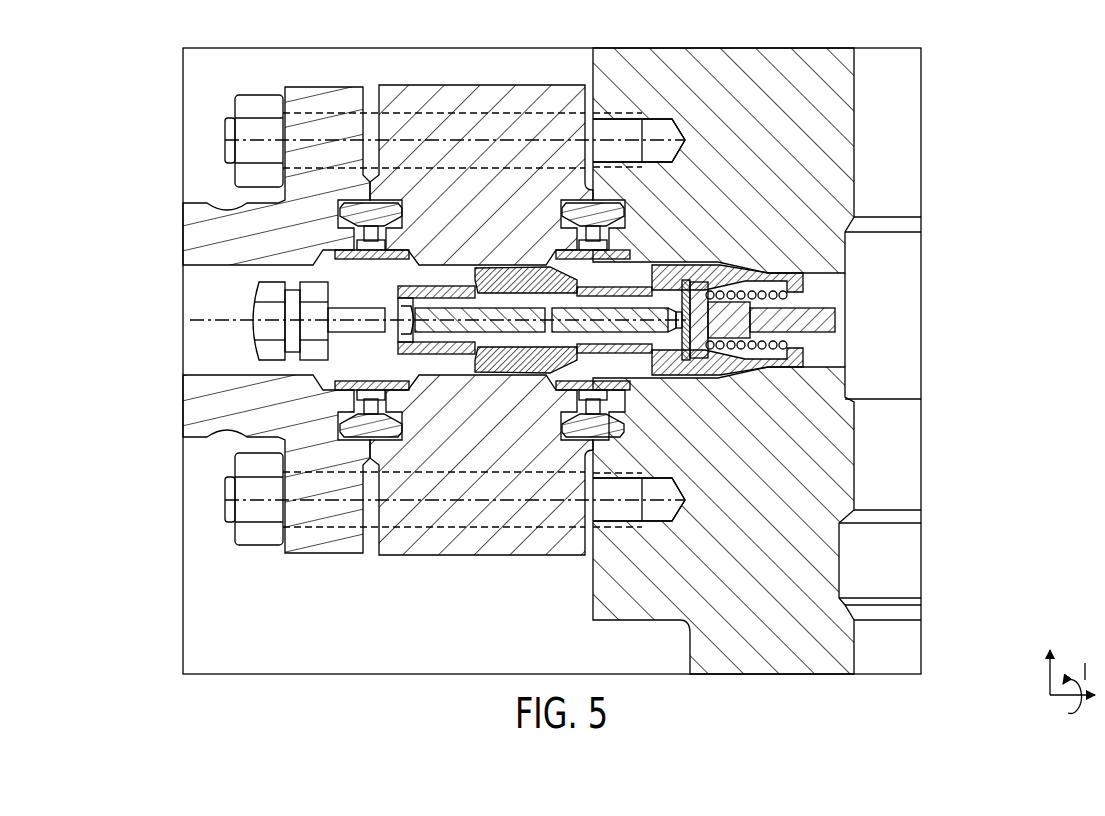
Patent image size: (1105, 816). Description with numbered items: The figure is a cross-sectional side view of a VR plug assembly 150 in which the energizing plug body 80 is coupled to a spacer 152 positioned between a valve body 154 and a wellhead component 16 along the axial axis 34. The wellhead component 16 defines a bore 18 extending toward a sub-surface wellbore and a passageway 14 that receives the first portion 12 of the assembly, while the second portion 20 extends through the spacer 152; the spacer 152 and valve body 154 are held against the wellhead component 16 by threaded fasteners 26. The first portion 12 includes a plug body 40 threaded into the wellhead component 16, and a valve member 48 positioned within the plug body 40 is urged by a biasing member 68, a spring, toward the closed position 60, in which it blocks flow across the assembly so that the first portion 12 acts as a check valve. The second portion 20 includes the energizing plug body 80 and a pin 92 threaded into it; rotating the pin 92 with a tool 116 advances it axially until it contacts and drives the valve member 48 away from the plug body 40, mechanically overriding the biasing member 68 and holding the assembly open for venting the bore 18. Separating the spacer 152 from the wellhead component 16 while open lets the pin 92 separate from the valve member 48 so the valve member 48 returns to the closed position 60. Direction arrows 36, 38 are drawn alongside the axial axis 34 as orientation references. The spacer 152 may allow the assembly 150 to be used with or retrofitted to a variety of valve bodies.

The first portion 12 is at (721, 241).
The passageway 14 is at (816, 272).
The wellhead component 16 is at (762, 68).
The bore 18 is at (896, 142).
The second portion 20 is at (462, 258).
The fasteners 26 is at (530, 130).
The axial axis 34 is at (1062, 698).
The transverse direction 36 is at (1049, 679).
The rotational direction 38 is at (1080, 675).
The plug body 40 is at (683, 274).
The valve member 48 is at (717, 346).
The closed position 60 is at (743, 195).
The biasing member 68 is at (758, 297).
The energizing plug body 80 is at (544, 271).
The pin 92 is at (462, 327).
The tool 116 is at (262, 347).
The VR plug assembly 150 is at (653, 250).
The spacer 152 is at (485, 95).
The valve body 154 is at (325, 93).